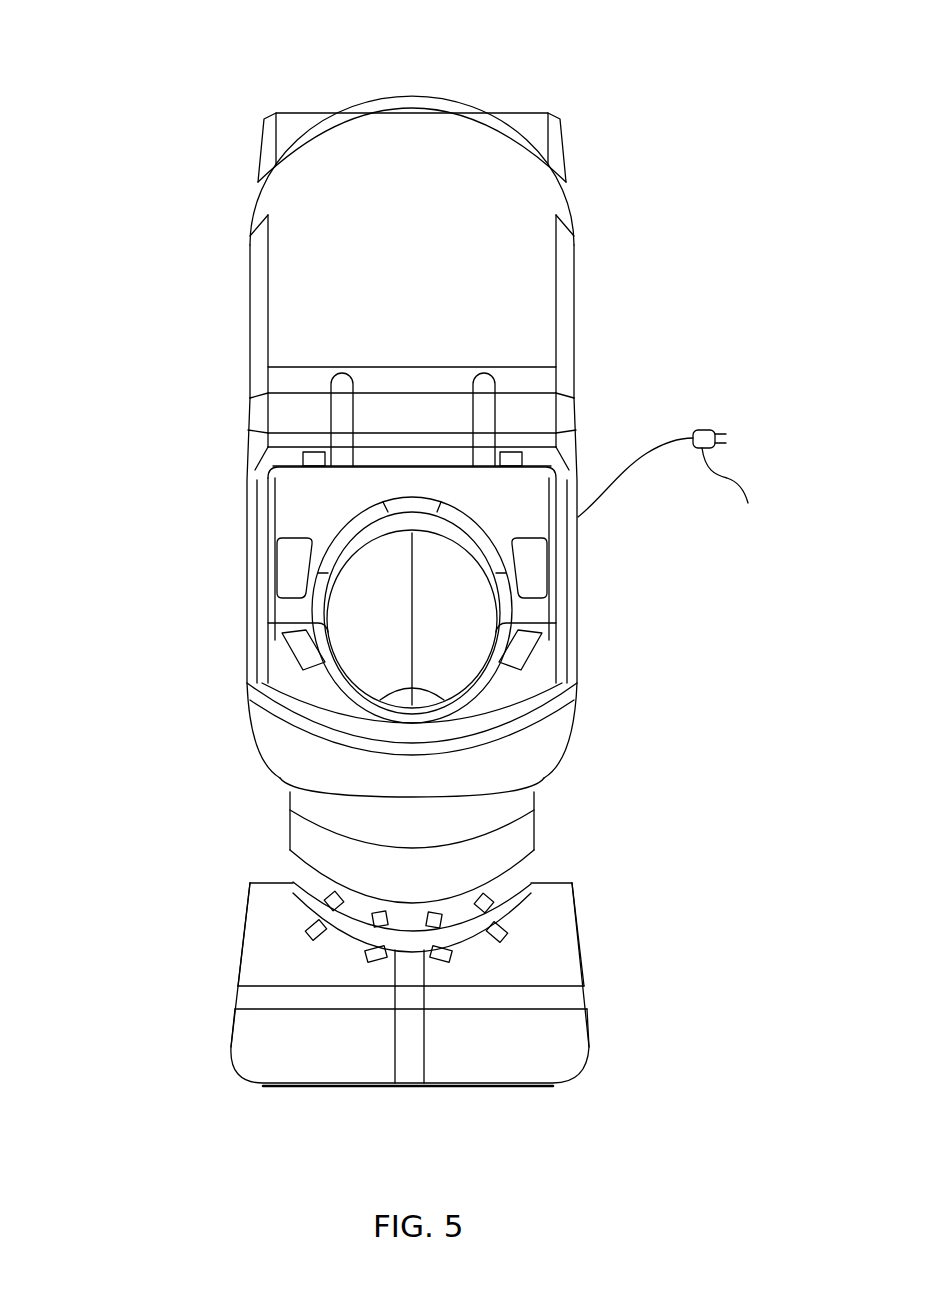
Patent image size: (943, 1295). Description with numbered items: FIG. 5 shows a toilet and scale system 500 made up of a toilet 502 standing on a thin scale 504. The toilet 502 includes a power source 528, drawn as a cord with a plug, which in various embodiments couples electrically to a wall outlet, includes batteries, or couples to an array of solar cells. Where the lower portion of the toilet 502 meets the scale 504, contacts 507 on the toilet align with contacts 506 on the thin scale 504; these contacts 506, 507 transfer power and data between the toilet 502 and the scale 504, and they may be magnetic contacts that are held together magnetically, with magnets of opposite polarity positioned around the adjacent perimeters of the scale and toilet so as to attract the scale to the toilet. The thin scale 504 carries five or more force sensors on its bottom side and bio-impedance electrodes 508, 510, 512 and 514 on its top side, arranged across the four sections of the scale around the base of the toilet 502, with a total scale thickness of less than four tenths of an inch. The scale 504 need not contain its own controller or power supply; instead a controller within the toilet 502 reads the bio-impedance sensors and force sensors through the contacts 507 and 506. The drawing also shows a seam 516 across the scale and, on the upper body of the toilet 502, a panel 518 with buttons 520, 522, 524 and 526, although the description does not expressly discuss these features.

The system 500 is at (160, 66).
The toilet 502 is at (517, 833).
The scale 504 is at (345, 1108).
The contacts 506 is at (500, 933).
The contacts 507 is at (500, 898).
The bio-impedance electrode 508 is at (250, 938).
The bio-impedance electrode 510 is at (262, 1043).
The bio-impedance electrode 512 is at (562, 970).
The bio-impedance electrode 514 is at (555, 1040).
The base seam 516 is at (243, 997).
The control panel 518 is at (288, 497).
The button 520 is at (278, 570).
The button 522 is at (297, 650).
The button 524 is at (540, 568).
The button 526 is at (540, 640).
The power source 528 is at (680, 488).